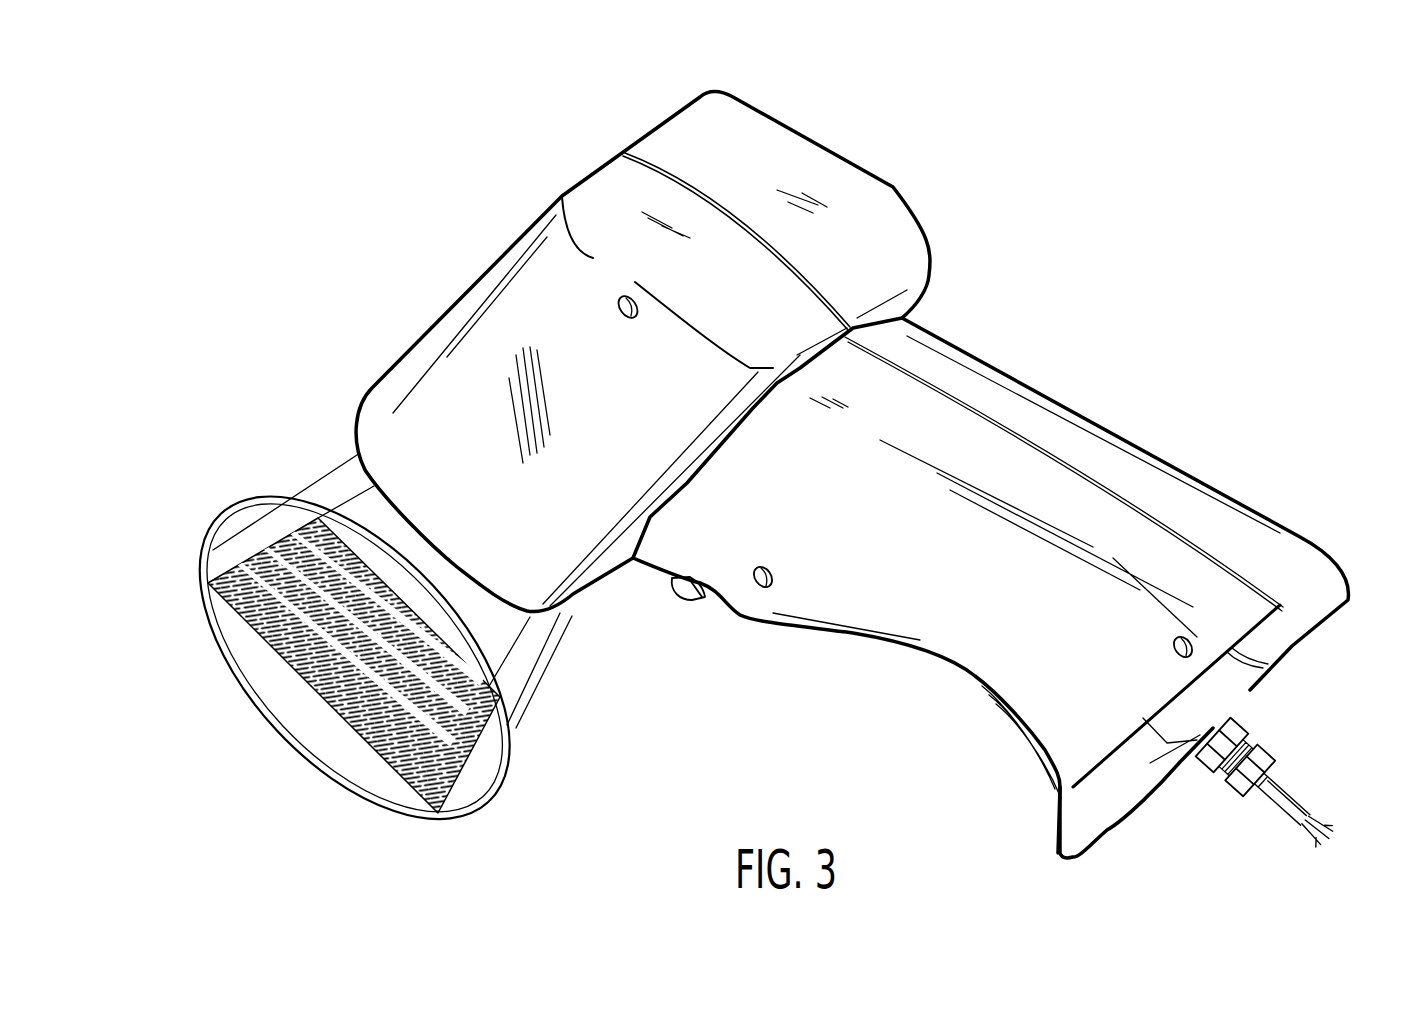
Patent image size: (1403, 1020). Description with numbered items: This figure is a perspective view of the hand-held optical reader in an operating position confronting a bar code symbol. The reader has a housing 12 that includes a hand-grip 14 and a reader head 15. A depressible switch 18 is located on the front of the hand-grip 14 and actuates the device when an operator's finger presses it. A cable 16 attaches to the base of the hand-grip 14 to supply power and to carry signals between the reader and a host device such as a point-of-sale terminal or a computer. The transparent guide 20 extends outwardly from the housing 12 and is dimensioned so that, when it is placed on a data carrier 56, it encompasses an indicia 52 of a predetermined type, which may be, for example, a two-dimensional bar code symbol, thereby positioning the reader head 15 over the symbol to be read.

The housing 12 is at (624, 400).
The hand-grip 14 is at (1047, 397).
The reader head 15 is at (405, 360).
The cable 16 is at (1303, 812).
The depressible switch 18 is at (693, 598).
The transparent guide 20 is at (538, 692).
The indicia 52 is at (407, 727).
The data carrier 56 is at (467, 762).